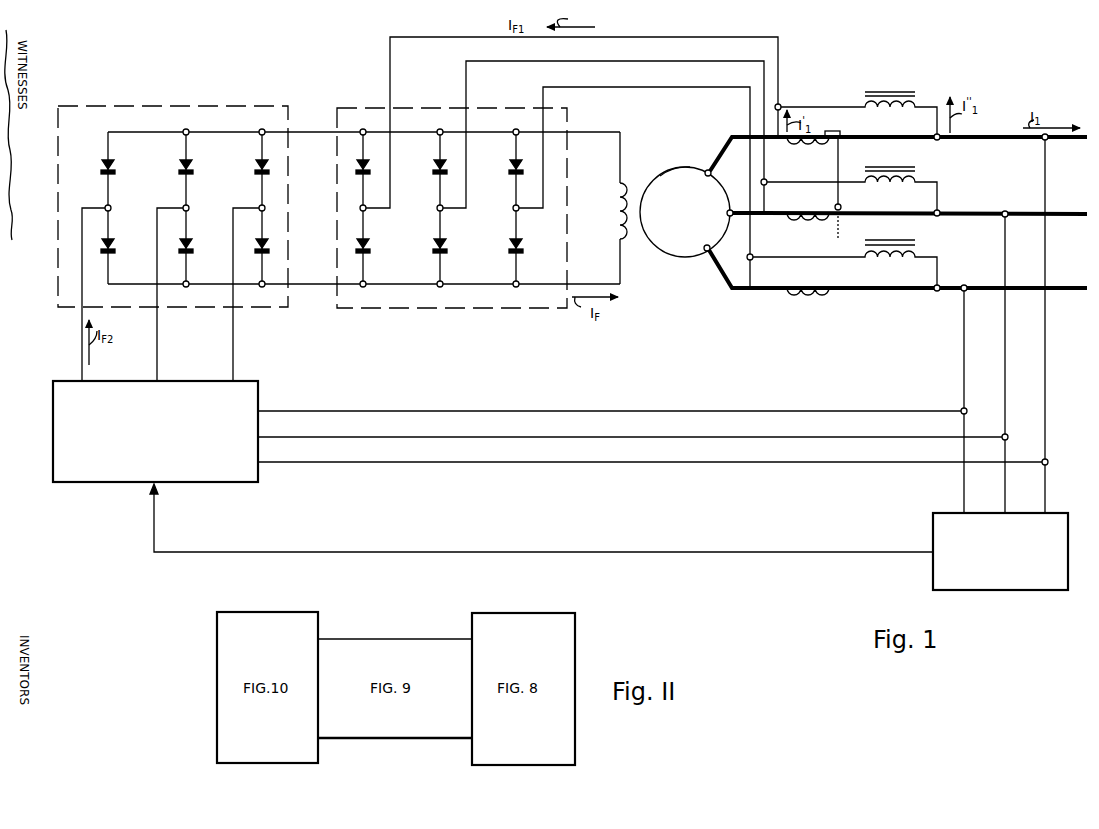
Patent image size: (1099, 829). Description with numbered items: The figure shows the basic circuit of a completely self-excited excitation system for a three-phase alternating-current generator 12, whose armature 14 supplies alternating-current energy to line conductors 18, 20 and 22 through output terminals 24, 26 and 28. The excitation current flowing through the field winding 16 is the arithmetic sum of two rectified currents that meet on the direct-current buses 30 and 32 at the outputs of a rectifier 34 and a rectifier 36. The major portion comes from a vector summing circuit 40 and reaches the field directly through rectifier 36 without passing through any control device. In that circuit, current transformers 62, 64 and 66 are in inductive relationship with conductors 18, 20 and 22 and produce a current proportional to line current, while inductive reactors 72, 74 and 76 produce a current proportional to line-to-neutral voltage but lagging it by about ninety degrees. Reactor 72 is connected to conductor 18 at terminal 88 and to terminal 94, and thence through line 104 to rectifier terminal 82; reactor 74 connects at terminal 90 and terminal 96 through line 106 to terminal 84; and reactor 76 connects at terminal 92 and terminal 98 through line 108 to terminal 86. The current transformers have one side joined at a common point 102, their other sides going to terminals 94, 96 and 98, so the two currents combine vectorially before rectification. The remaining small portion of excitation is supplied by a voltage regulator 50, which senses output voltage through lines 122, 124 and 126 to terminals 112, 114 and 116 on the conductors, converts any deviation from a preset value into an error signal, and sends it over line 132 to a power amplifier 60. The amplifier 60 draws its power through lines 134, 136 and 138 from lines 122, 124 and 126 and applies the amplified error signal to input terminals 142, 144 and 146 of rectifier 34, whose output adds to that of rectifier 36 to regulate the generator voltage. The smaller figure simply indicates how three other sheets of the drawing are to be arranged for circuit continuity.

The three-phase alternating-current generator 12 is at (660, 298).
The armature 14 is at (674, 167).
The excitation field winding 16 is at (618, 213).
The line conductor 18 is at (1005, 135).
The line conductor 20 is at (980, 213).
The line conductor 22 is at (996, 286).
The output terminal 24 is at (711, 173).
The output terminal 26 is at (733, 216).
The output terminal 28 is at (705, 251).
The direct-current bus 30 is at (316, 132).
The direct-current bus 32 is at (323, 286).
The rectifier 34 is at (204, 106).
The rectifier 36 is at (438, 106).
The vector summing circuit 40 is at (888, 328).
The voltage regulator 50 is at (1012, 590).
The power amplifier 60 is at (202, 482).
The current transformer 62 is at (790, 144).
The current transformer 64 is at (790, 220).
The current transformer 66 is at (790, 295).
The inductive reactor 72 is at (900, 88).
The inductive reactor 74 is at (900, 166).
The inductive reactor 76 is at (908, 241).
The rectifier terminal 82 is at (365, 212).
The rectifier terminal 84 is at (442, 212).
The rectifier terminal 86 is at (518, 212).
The terminal 88 is at (937, 140).
The terminal 90 is at (937, 216).
The terminal 92 is at (936, 286).
The terminal 94 is at (780, 105).
The terminal 96 is at (766, 185).
The terminal 98 is at (752, 260).
The common point 102 is at (841, 205).
The line 104 is at (711, 37).
The line 106 is at (711, 61).
The line 108 is at (711, 87).
The terminal 112 is at (1043, 140).
The terminal 114 is at (999, 201).
The terminal 116 is at (964, 291).
The line 122 is at (1044, 511).
The line 124 is at (1002, 510).
The line 126 is at (952, 510).
The line 132 is at (570, 552).
The line 134 is at (570, 462).
The line 136 is at (570, 437).
The line 138 is at (570, 411).
The input terminal 142 is at (105, 205).
The input terminal 144 is at (183, 205).
The input terminal 146 is at (259, 205).